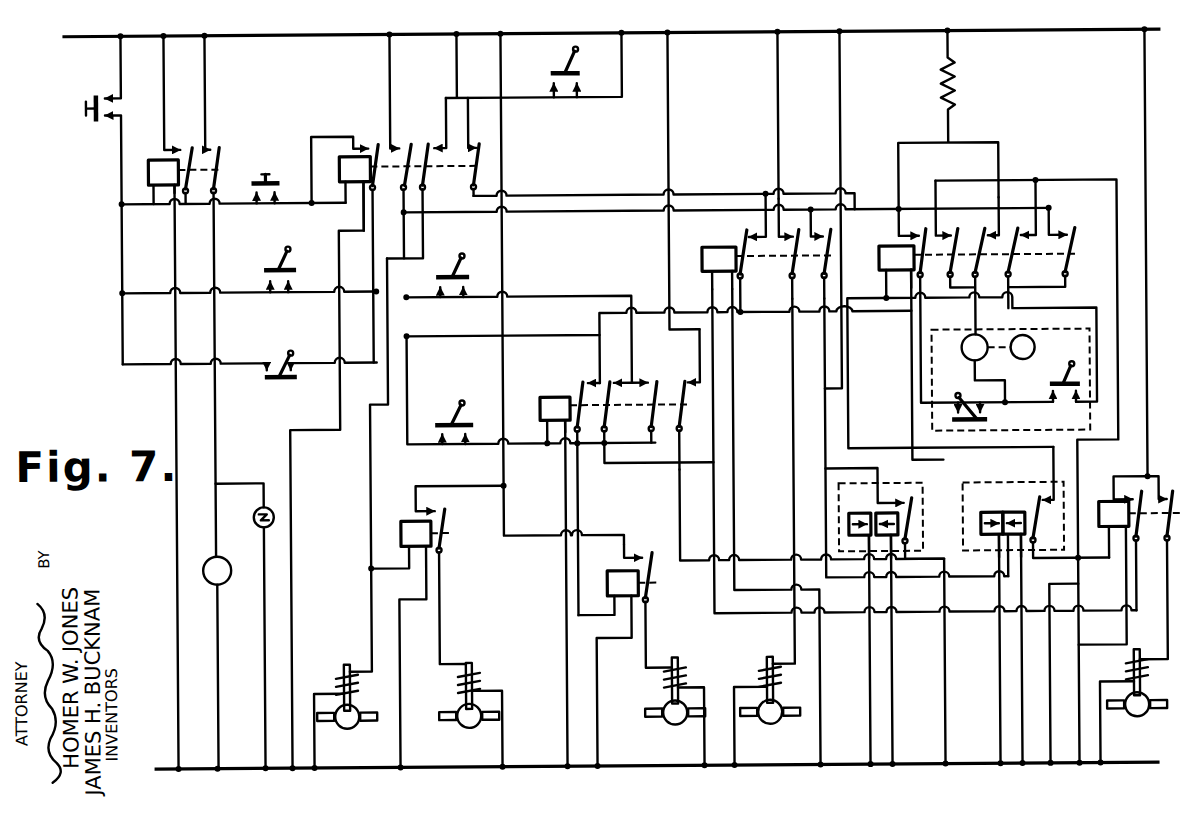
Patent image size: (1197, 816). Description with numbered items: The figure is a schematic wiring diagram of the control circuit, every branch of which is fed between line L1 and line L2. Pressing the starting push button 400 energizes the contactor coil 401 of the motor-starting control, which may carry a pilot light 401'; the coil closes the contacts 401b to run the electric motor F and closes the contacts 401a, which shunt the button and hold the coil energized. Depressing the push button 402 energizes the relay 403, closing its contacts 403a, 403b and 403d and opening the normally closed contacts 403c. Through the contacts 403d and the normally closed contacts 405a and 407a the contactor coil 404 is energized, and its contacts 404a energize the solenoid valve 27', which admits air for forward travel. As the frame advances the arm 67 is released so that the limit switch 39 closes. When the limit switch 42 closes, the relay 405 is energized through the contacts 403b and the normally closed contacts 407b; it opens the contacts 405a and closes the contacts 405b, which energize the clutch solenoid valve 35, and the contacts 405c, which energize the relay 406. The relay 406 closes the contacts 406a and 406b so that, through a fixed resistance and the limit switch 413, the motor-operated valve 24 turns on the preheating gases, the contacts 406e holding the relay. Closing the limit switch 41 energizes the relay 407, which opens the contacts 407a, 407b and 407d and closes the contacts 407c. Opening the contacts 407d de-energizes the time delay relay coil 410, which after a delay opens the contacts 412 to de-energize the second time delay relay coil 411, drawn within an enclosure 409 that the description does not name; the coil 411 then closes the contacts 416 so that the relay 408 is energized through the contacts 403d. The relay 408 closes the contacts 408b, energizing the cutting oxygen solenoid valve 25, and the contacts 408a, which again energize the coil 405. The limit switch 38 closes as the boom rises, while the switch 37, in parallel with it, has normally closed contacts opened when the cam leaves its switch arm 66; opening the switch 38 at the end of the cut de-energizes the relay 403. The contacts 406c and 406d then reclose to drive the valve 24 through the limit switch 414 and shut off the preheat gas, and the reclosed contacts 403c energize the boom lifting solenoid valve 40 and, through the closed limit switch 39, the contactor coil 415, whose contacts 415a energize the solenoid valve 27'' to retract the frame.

The line L1 is at (341, 30).
The line L2 is at (457, 768).
The starting push button 400 is at (92, 110).
The contactor coil 401 is at (145, 182).
The pair of contacts 401a is at (188, 143).
The pair of contacts 401b is at (217, 145).
The push button 402 is at (274, 163).
The relay 403 is at (357, 184).
The relay contacts 403a is at (379, 143).
The relay contacts 403b is at (411, 143).
The relay contacts 403c is at (432, 156).
The relay contacts 403d is at (482, 142).
The switch arm 67 is at (574, 50).
The limit switch 39 is at (552, 74).
The limit switch 38 is at (281, 258).
The limit switch 42 is at (461, 268).
The limit switch 41 is at (452, 417).
The limit switch 37 is at (280, 369).
The switch arm 66 is at (292, 348).
The pilot or signal light 401' is at (266, 489).
The electric motor F is at (228, 576).
The contactor coil 415 is at (400, 532).
The contacts 415a is at (446, 524).
The contactor coil 404 is at (606, 584).
The contacts 404a is at (643, 556).
The relay 407 is at (550, 397).
The relay contacts 407a is at (584, 382).
The relay contacts 407b is at (613, 393).
The relay contacts 407c is at (656, 380).
The relay contacts 407d is at (690, 389).
The relay 405 is at (705, 270).
The relay contacts 405a is at (748, 229).
The relay contacts 405b is at (795, 272).
The relay contacts 405c is at (828, 283).
The relay 406 is at (888, 277).
The relay contacts 406a is at (920, 230).
The relay contacts 406b is at (953, 231).
The relay contacts 406c is at (988, 258).
The relay contacts 406d is at (1021, 230).
The relay contacts 406e is at (1071, 231).
The motor-operated valve 24 is at (1043, 340).
The limit switch 414 is at (1058, 390).
The limit switch 413 is at (983, 422).
The contacts 412 is at (905, 505).
The time delay relay coil 410 is at (858, 509).
The control unit 409 is at (1013, 485).
The second time delay relay coil 411 is at (998, 515).
The contacts 416 is at (1040, 496).
The relay 408 is at (1114, 531).
The relay contacts 408a is at (1139, 496).
The relay contacts 408b is at (1168, 494).
The boom lifting solenoid valve 40 is at (350, 722).
The solenoid valve 27'' is at (466, 715).
The solenoid valve 27' is at (669, 711).
The solenoid operated valve 35 is at (771, 723).
The solenoid valve 25 is at (1142, 718).